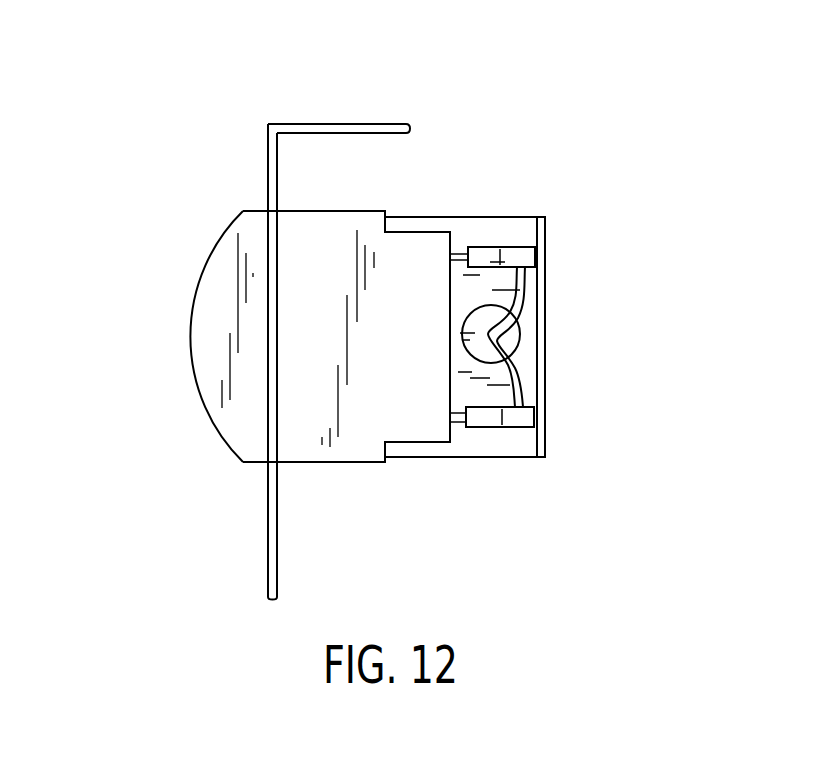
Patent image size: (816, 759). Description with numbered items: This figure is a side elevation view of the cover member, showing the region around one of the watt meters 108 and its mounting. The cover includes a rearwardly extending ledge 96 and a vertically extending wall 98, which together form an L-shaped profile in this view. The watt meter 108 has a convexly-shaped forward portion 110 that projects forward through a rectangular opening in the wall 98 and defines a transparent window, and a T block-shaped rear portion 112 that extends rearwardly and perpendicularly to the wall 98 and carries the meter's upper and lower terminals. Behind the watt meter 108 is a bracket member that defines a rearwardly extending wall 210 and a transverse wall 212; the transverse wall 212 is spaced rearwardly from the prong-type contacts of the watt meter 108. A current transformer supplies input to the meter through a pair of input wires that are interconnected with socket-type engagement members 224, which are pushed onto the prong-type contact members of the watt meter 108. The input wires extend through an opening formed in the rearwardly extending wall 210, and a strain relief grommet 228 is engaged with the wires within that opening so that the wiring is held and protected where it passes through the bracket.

The rearwardly extending ledge 96 is at (340, 123).
The vertically extending wall 98 is at (277, 517).
The watt meter 108 is at (329, 467).
The convexly-shaped forward portion 110 is at (192, 337).
The T block-shaped rear portion 112 is at (420, 359).
The rearwardly extending wall 210 is at (518, 218).
The transverse wall 212 is at (543, 333).
The socket-type engagement members 224 is at (500, 258).
The strain relief grommet 228 is at (532, 342).